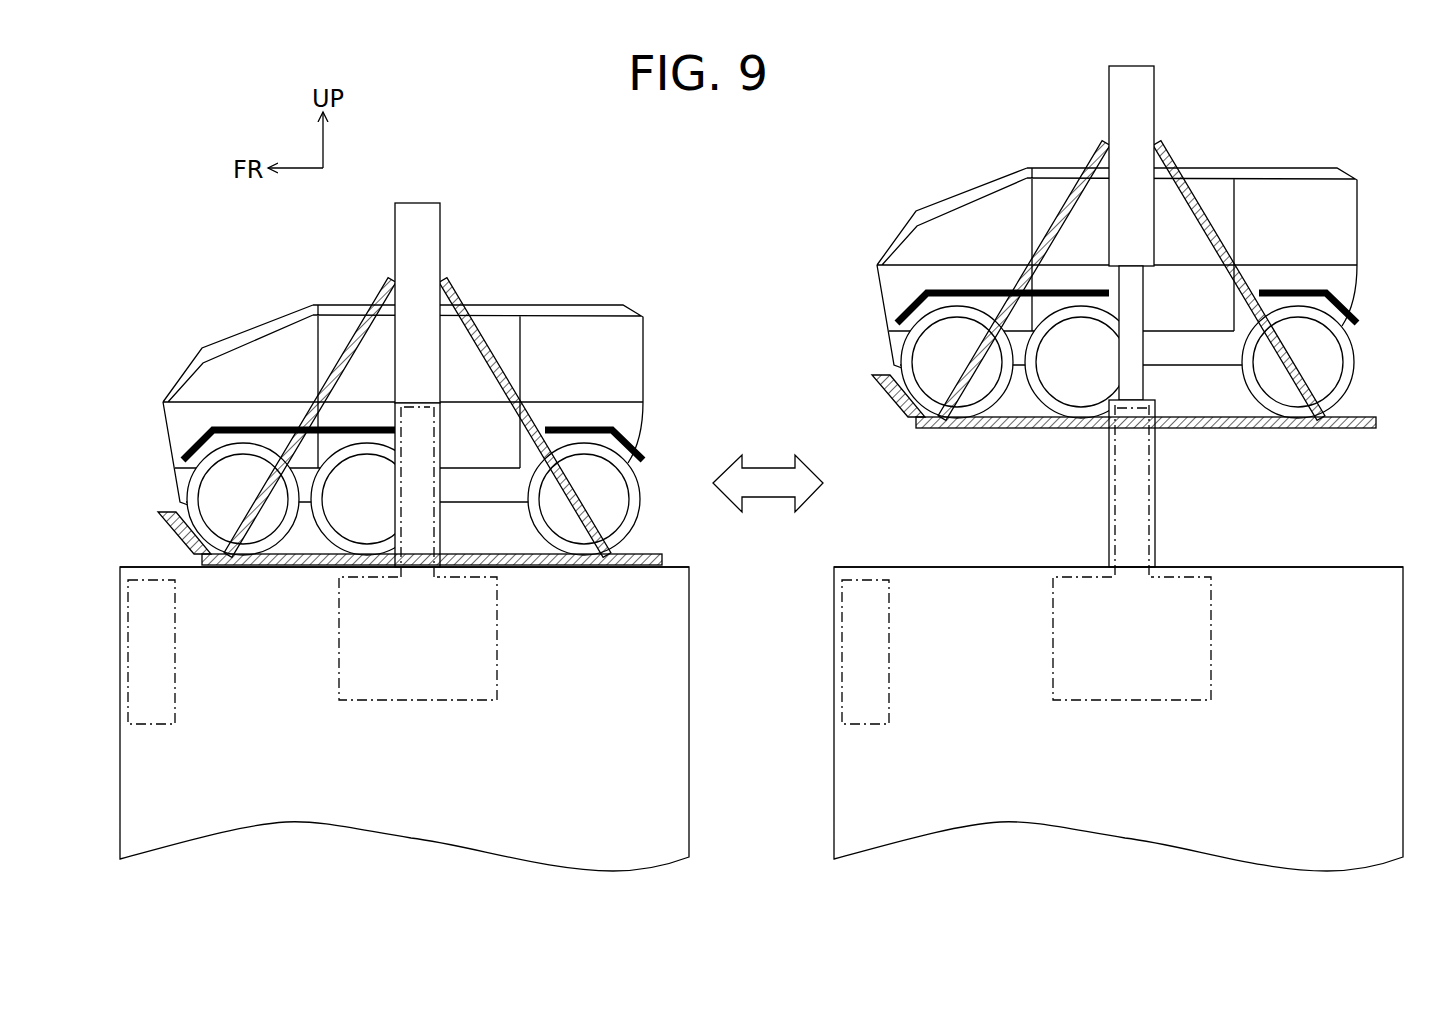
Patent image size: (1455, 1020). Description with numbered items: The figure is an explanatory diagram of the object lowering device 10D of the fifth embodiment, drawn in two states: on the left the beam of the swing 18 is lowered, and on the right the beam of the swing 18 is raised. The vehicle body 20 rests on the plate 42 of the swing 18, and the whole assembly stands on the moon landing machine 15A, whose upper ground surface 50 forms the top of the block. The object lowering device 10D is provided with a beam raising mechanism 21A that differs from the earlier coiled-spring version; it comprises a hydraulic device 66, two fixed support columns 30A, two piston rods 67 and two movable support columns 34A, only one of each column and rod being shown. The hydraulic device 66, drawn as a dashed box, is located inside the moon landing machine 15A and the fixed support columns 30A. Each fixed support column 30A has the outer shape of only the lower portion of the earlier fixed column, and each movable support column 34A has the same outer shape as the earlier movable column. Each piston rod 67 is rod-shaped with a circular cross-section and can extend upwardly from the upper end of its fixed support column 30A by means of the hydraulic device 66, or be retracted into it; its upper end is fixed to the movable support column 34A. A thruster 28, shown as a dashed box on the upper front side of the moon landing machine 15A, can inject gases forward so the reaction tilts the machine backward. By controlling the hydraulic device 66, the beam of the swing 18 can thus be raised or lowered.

The object lowering device 10D is at (198, 250).
The vehicle body 20 is at (558, 305).
The swing 18 is at (665, 426).
The movable support column 34A is at (441, 225).
The piston rod 67 is at (1143, 386).
The fixed support column 30A is at (441, 529).
The platform plate 42 is at (645, 553).
The moon landing machine 15A is at (689, 762).
The ground surface 50 is at (135, 566).
The thruster 28 is at (130, 734).
The hydraulic device 66 is at (501, 645).
The beam raising mechanism 21A is at (334, 601).